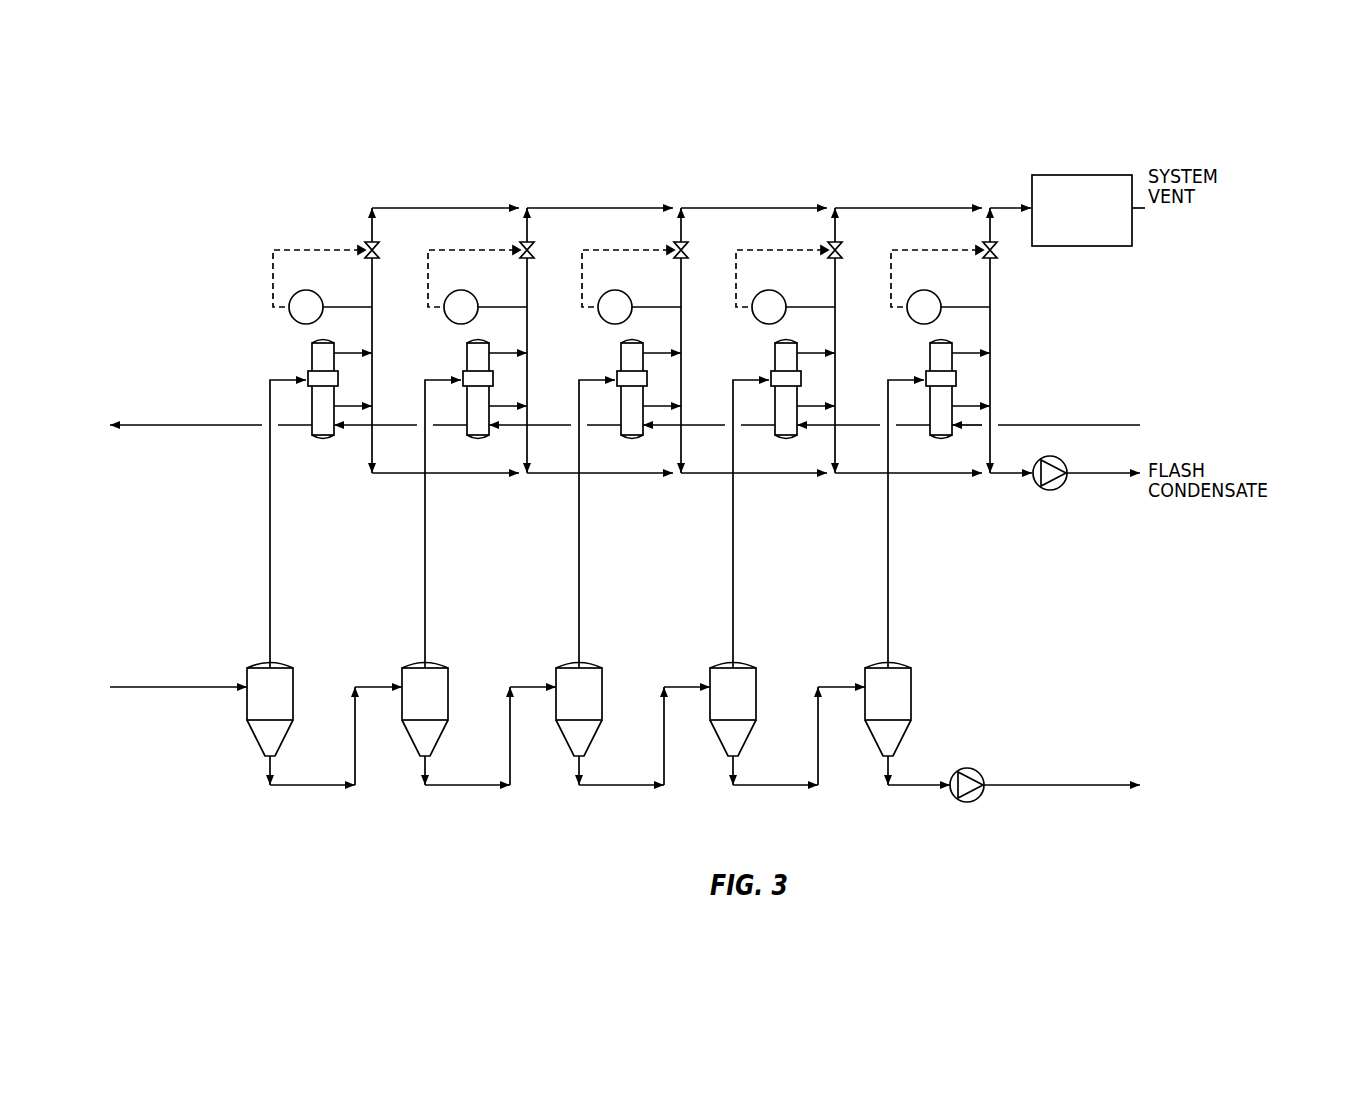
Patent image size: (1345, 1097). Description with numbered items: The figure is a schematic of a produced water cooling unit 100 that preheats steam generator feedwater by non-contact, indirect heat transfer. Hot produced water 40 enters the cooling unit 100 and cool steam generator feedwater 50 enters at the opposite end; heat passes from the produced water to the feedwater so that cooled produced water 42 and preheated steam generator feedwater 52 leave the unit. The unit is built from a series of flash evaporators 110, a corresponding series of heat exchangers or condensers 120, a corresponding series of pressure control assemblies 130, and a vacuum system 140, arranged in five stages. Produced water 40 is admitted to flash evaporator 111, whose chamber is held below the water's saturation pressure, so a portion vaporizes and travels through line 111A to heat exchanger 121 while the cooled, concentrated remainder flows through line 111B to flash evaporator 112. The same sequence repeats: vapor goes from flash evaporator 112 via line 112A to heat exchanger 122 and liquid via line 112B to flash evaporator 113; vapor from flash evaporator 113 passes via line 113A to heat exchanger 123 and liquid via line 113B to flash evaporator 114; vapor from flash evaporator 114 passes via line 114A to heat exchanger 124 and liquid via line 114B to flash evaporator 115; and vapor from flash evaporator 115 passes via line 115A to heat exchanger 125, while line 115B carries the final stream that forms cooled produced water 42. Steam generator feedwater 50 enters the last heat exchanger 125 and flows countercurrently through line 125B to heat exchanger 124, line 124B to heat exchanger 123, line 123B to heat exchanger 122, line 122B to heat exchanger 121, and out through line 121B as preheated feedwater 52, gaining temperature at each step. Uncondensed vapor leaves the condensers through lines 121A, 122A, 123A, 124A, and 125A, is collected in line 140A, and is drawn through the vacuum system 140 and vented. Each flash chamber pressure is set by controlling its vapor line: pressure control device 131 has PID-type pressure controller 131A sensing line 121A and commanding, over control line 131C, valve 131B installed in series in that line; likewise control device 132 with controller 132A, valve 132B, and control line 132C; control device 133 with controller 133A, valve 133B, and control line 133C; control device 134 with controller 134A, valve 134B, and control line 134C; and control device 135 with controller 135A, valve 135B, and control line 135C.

The produced water cooling unit 100 is at (1070, 110).
The series of flash evaporators 110 is at (1077, 660).
The series of heat exchangers 120 is at (1088, 357).
The series of pressure control assemblies 130 is at (1040, 288).
The vacuum system 140 is at (1066, 238).
The vapor collection line 140A is at (945, 207).
The produced water 40 is at (175, 689).
The cooled produced water 42 is at (1030, 785).
The steam generator feedwater 50 is at (1065, 425).
The preheated steam generator feedwater 52 is at (200, 425).
The first flash evaporator 111 is at (293, 672).
The first vapor line 111A is at (272, 556).
The first cooled produced water line 111B is at (333, 787).
The second flash evaporator 112 is at (448, 672).
The second vapor line 112A is at (427, 556).
The second cooled produced water line 112B is at (488, 787).
The third flash evaporator 113 is at (602, 672).
The third vapor line 113A is at (581, 556).
The third cooled produced water line 113B is at (642, 787).
The fourth flash evaporator 114 is at (756, 672).
The fourth vapor line 114A is at (735, 556).
The fourth cooled produced water line 114B is at (796, 787).
The fifth flash evaporator 115 is at (911, 672).
The fifth vapor line 115A is at (890, 556).
The fifth cooled produced water line 115B is at (930, 787).
The first heat exchanger 121 is at (312, 360).
The first uncondensed vapor line 121A is at (373, 320).
The first feedwater outlet line 121B is at (290, 428).
The second heat exchanger 122 is at (467, 360).
The second uncondensed vapor line 122A is at (528, 320).
The second feedwater line 122B is at (445, 428).
The third heat exchanger 123 is at (621, 360).
The third uncondensed vapor line 123A is at (682, 320).
The third feedwater line 123B is at (599, 428).
The fourth heat exchanger 124 is at (775, 360).
The fourth uncondensed vapor line 124A is at (836, 320).
The fourth feedwater line 124B is at (753, 428).
The fifth heat exchanger 125 is at (930, 360).
The fifth uncondensed vapor line 125A is at (991, 320).
The fifth feedwater line 125B is at (908, 428).
The first pressure control device 131 is at (295, 258).
The first pressure controller 131A is at (306, 290).
The first valve 131B is at (366, 243).
The first control line 131C is at (312, 248).
The second pressure control device 132 is at (451, 247).
The second pressure controller 132A is at (461, 290).
The second valve 132B is at (521, 243).
The second control line 132C is at (458, 249).
The third pressure control device 133 is at (605, 247).
The third pressure controller 133A is at (615, 290).
The third valve 133B is at (675, 243).
The third control line 133C is at (612, 249).
The fourth pressure control device 134 is at (759, 247).
The fourth pressure controller 134A is at (769, 290).
The fourth valve 134B is at (829, 243).
The fourth control line 134C is at (766, 249).
The fifth pressure control device 135 is at (914, 247).
The fifth pressure controller 135A is at (924, 290).
The fifth valve 135B is at (984, 243).
The fifth control line 135C is at (921, 249).